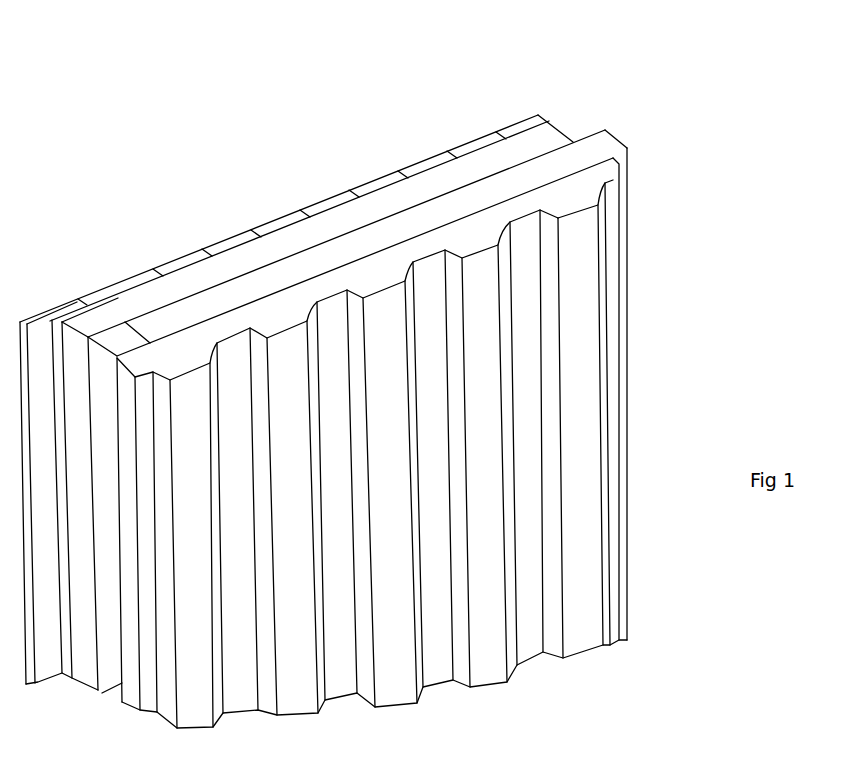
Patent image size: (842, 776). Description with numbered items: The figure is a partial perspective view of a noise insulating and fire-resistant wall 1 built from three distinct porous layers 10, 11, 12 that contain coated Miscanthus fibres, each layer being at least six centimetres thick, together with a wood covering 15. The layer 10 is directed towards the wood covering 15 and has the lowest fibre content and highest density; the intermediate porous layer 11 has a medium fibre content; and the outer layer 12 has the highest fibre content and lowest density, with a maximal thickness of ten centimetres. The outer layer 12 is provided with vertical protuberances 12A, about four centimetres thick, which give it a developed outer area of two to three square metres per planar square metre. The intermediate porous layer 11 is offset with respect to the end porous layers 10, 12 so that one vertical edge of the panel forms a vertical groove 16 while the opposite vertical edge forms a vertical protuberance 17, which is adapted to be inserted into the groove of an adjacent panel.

The noise insulating wall 1 is at (400, 149).
The porous layer 10 is at (540, 140).
The intermediate porous layer 11 is at (322, 257).
The outer layer 12 is at (628, 152).
The vertical protuberances 12A is at (600, 206).
The wood covering 15 is at (180, 260).
The vertical groove 16 is at (115, 337).
The vertical protuberance 17 is at (605, 133).